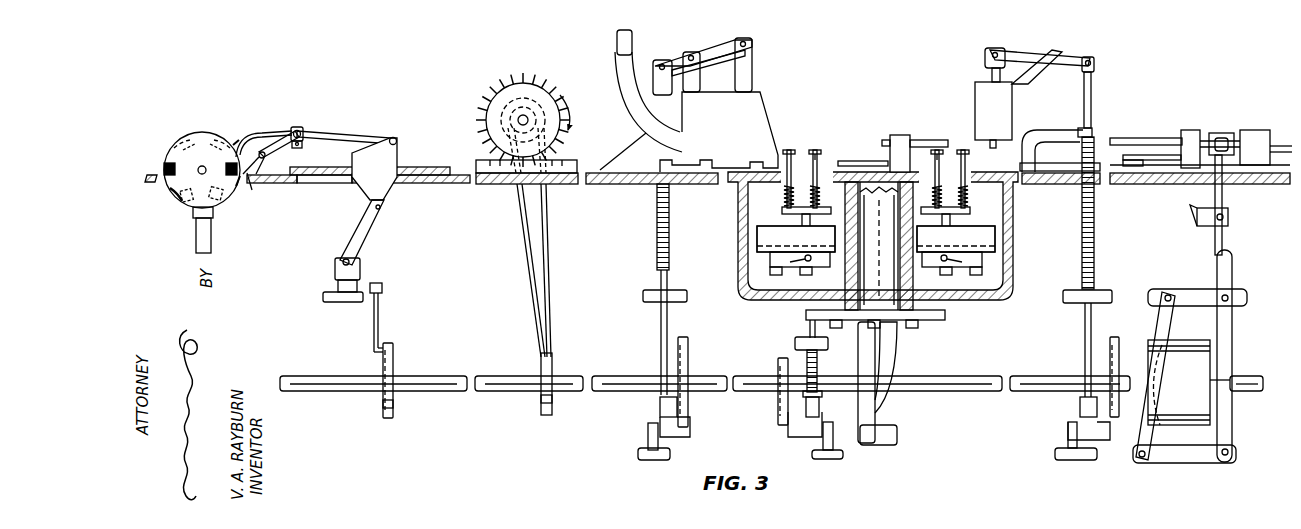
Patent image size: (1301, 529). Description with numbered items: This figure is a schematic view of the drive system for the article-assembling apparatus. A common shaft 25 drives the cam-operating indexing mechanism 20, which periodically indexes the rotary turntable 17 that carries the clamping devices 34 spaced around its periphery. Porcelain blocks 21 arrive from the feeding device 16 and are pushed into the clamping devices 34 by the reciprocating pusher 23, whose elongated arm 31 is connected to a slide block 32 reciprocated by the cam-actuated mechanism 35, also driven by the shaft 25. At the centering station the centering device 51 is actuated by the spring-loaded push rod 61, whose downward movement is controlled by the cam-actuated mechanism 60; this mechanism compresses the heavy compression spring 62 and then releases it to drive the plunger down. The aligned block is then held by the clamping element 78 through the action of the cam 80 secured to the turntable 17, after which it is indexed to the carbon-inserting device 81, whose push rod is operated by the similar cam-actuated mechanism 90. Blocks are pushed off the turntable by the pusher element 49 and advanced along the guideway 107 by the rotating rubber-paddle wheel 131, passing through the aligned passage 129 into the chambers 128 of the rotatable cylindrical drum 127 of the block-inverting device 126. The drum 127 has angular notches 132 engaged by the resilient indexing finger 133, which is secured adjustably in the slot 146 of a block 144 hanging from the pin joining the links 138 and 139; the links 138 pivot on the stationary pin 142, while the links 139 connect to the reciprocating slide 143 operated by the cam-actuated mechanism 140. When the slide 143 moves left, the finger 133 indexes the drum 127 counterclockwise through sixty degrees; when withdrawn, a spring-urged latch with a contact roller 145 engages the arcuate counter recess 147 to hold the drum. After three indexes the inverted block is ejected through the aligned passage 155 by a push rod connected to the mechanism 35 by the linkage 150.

The feeding device 16 is at (1175, 108).
The rotary turntable 17 is at (826, 170).
The cam-operating indexing mechanism 20 is at (912, 338).
The porcelain block 21 is at (227, 167).
The reciprocating pusher 23 is at (899, 134).
The shaft 25 is at (456, 391).
The elongated arm 31 is at (1142, 170).
The slide block 32 is at (1195, 130).
The clamping device 34 is at (808, 144).
The cam-actuated mechanism 35 is at (1236, 279).
The pusher element 49 is at (863, 161).
The centering device 51 is at (1113, 43).
The cam-actuated mechanism 60 is at (1107, 447).
The spring-loaded push rod 61 is at (1091, 106).
The compression spring 62 is at (1094, 243).
The clamping element 78 is at (818, 168).
The cam 80 is at (769, 256).
The carbon-inserting device 81 is at (773, 92).
The cam-actuated mechanism 90 is at (655, 406).
The guideway 107 is at (560, 160).
The block-inverting device 126 is at (194, 168).
The rotatable cylindrical drum 127 is at (213, 124).
The chamber 128 is at (189, 165).
The aligned passage 129 is at (248, 180).
The rubber-paddle wheel 131 is at (545, 85).
The angular notch 132 is at (239, 192).
The resilient indexing finger 133 is at (268, 128).
The links 138 is at (297, 130).
The links 139 is at (352, 136).
The cam-actuated mechanism 140 is at (392, 285).
The stationary pin 142 is at (270, 170).
The reciprocating slide 143 is at (398, 152).
The block 144 is at (303, 140).
The contact roller 145 is at (194, 214).
The slot 146 is at (297, 146).
The arcuate-shaped counter recess 147 is at (170, 193).
The linkage 150 is at (1210, 212).
The aligned passage 155 is at (164, 167).